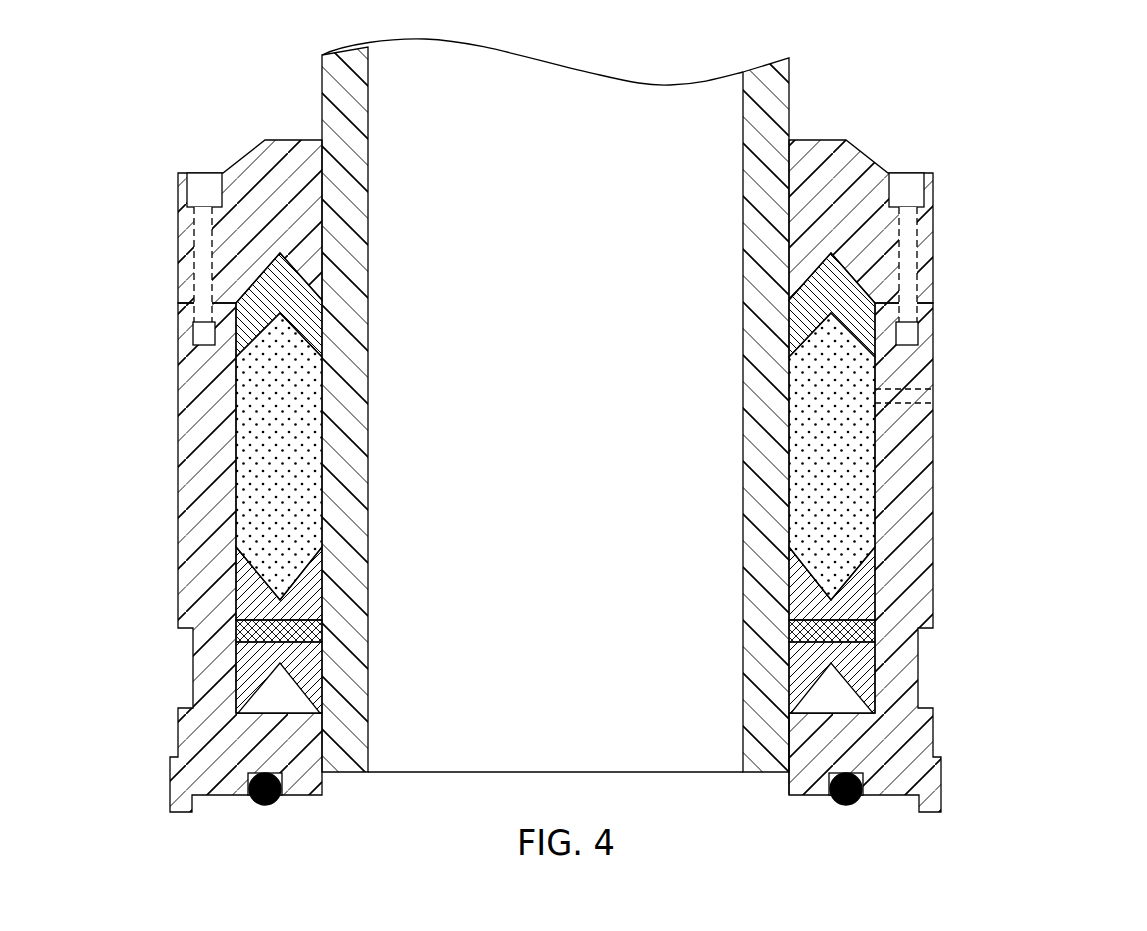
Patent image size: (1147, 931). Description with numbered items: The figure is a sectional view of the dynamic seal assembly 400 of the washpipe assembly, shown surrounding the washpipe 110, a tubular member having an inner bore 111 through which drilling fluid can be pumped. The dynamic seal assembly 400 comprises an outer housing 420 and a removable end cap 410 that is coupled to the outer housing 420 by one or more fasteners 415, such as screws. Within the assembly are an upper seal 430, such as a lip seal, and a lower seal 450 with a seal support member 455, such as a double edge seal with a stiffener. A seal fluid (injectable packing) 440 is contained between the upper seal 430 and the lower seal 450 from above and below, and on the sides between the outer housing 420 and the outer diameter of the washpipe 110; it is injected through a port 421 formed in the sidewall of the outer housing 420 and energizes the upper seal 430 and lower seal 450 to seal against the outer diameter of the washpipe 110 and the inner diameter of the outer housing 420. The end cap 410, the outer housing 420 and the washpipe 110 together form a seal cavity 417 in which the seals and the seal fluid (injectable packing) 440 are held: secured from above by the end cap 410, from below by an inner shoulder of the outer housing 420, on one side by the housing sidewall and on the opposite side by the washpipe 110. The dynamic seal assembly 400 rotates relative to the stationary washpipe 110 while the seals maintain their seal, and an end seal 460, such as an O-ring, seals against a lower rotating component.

The washpipe 110 is at (790, 92).
The inner bore 111 is at (369, 66).
The dynamic seal assembly 400 is at (1042, 95).
The end cap 410 is at (934, 200).
The fasteners 415 is at (904, 180).
The seal cavity 417 is at (815, 713).
The outer housing 420 is at (935, 429).
The port 421 is at (910, 397).
The upper seal 430 is at (835, 268).
The seal fluid (injectable packing) 440 is at (845, 488).
The lower seal 450 is at (862, 598).
The seal support member 455 is at (878, 634).
The end seal 460 is at (847, 806).